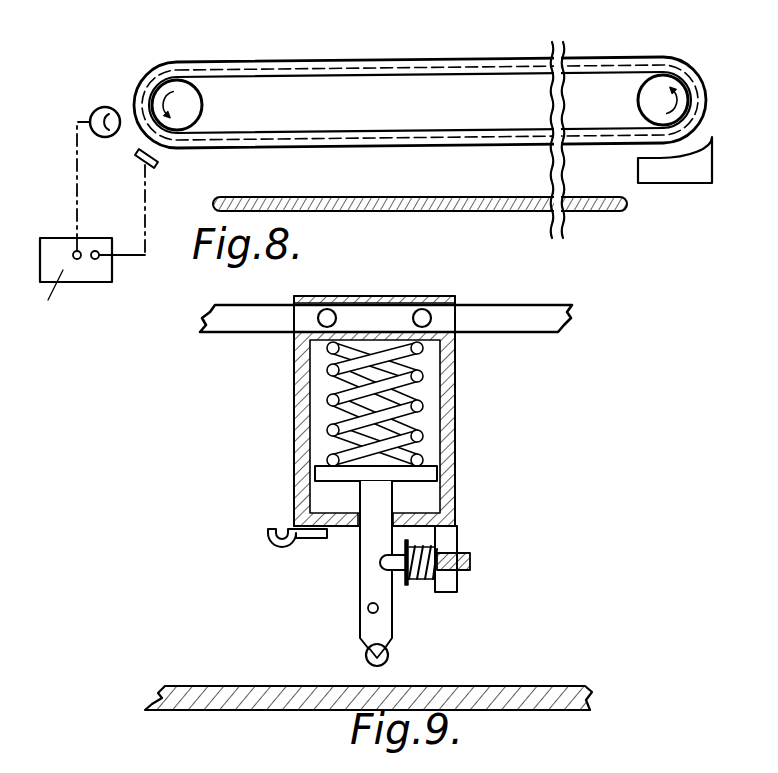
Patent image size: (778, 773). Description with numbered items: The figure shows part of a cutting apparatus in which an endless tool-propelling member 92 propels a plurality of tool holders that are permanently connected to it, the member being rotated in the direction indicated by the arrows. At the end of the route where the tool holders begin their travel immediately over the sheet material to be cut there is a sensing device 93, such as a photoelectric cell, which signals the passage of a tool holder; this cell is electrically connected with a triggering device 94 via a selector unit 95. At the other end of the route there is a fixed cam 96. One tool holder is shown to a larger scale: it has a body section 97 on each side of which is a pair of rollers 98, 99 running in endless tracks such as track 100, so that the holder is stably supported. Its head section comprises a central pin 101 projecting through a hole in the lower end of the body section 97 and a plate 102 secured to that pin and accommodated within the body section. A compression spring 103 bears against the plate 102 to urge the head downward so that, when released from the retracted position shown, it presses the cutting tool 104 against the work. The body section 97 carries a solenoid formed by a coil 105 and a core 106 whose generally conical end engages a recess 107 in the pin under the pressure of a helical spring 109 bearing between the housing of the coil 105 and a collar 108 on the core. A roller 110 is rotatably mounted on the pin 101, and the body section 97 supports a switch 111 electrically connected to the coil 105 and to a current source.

In FIG. 8, the endless tool-propelling member 92 is at (367, 66).
In FIG. 8, the sensing device 93 is at (96, 109).
In FIG. 8, the triggering device 94 is at (158, 162).
In FIG. 8, the selector unit 95 is at (113, 271).
In FIG. 8, the fixed cam 96 is at (684, 172).
In FIG. 9, the body section 97 is at (365, 296).
In FIG. 9, the roller 98 is at (318, 318).
In FIG. 9, the roller 99 is at (432, 318).
In FIG. 8, the endless track 100 is at (594, 58).
In FIG. 9, the endless track 100 is at (490, 305).
In FIG. 9, the central pin 101 is at (358, 555).
In FIG. 9, the plate 102 is at (440, 472).
In FIG. 9, the compression spring 103 is at (330, 400).
In FIG. 9, the cutting tool 104 is at (389, 656).
In FIG. 9, the coil 105 is at (455, 532).
In FIG. 9, the core 106 is at (470, 558).
In FIG. 9, the recess 107 is at (380, 563).
In FIG. 9, the collar 108 is at (406, 583).
In FIG. 9, the helical spring 109 is at (422, 578).
In FIG. 9, the roller 110 is at (369, 612).
In FIG. 9, the switch 111 is at (272, 548).